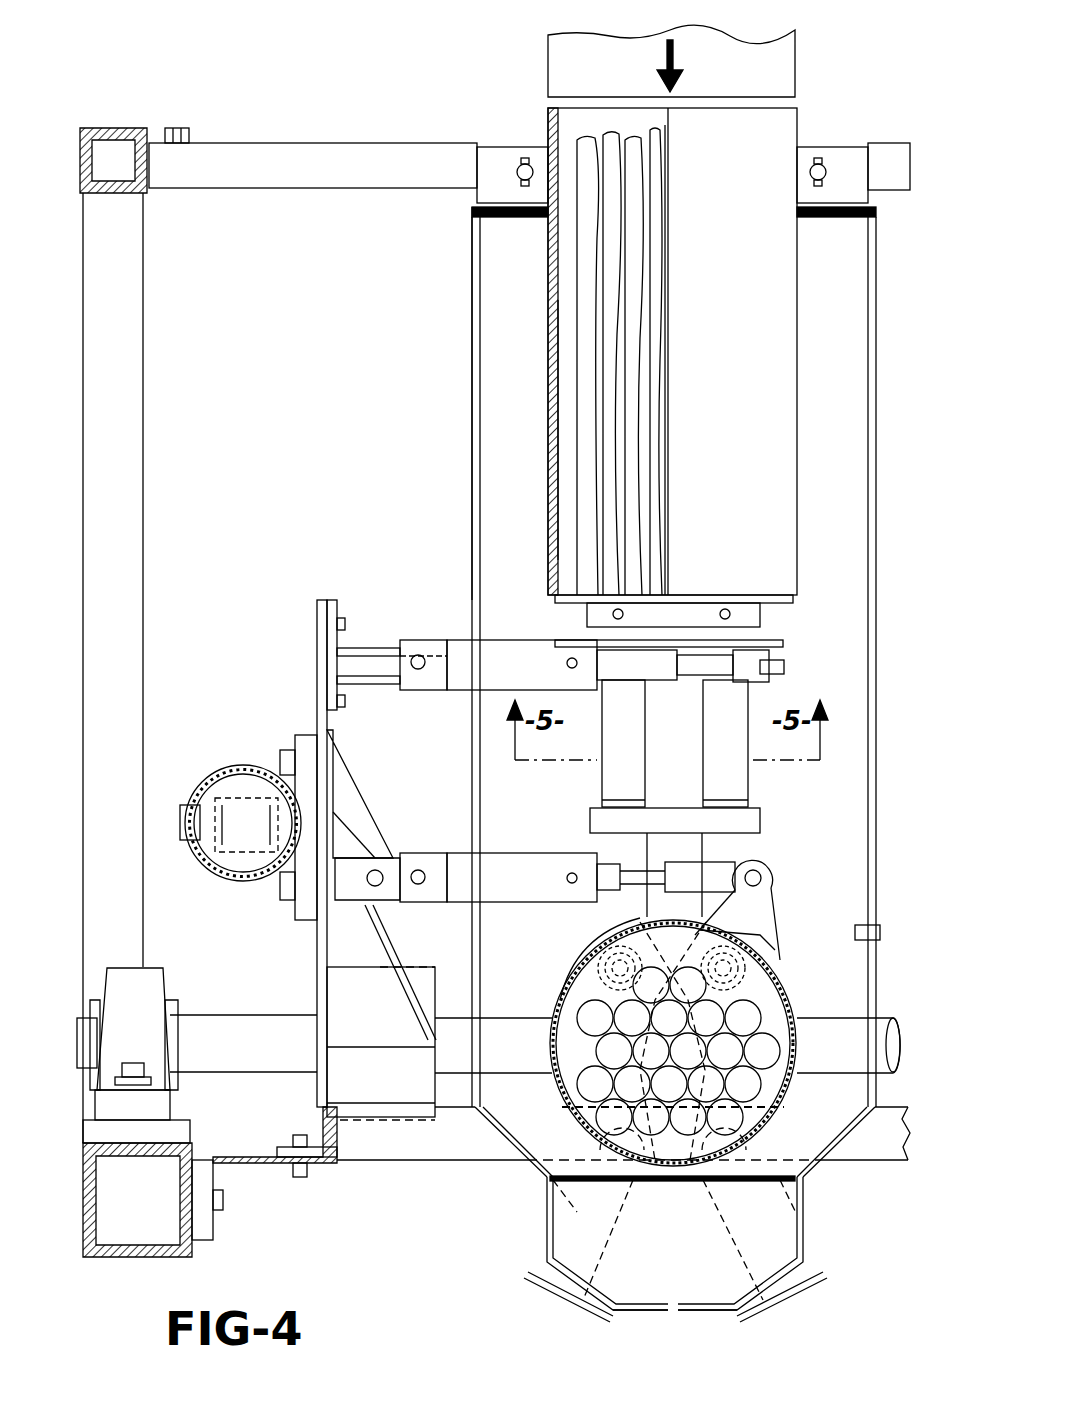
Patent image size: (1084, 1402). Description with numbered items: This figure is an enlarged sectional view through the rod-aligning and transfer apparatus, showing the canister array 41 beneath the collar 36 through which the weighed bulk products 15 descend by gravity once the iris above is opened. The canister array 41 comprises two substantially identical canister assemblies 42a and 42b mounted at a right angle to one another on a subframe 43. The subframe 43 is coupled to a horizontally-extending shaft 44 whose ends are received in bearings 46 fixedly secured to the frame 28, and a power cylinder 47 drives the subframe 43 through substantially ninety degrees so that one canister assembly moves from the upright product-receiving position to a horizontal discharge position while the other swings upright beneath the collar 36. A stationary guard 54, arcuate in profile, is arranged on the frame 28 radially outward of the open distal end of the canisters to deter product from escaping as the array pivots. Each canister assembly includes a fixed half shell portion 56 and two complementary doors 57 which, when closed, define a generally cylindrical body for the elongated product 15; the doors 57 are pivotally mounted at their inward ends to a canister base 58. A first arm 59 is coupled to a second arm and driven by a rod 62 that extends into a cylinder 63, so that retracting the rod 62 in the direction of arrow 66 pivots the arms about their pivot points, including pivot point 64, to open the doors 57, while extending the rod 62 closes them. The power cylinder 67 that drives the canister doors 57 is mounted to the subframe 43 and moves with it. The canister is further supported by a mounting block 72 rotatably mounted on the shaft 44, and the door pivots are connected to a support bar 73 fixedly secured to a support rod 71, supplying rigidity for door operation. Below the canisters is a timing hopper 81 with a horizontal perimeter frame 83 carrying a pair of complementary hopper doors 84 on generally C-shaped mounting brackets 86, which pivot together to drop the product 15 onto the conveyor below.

The bulk products 15 is at (600, 352).
The frame 28 is at (145, 628).
The collar 36 is at (548, 80).
The canister array 41 is at (812, 440).
The canister assembly 42a is at (548, 428).
The canister assembly 42b is at (575, 983).
The subframe 43 is at (318, 640).
The horizontally-extending shaft 44 is at (272, 998).
The bearings 46 is at (158, 985).
The power cylinder 47 is at (248, 770).
The stationary guard 54 is at (487, 268).
The fixed half shell portion 56 is at (772, 882).
The doors 57 is at (582, 1128).
The canister base 58 is at (750, 605).
The first arm 59 is at (766, 934).
The rod 62 is at (673, 1041).
The cylinder 63 is at (455, 640).
The pivot point 64 is at (625, 980).
The arrow 66 is at (630, 870).
The power cylinder 67 is at (455, 853).
The support rod 71 is at (700, 880).
The mounting block 72 is at (420, 1097).
The support bar 73 is at (762, 815).
The timing hopper 81 is at (547, 1203).
The perimeter frame 83 is at (350, 1163).
The hopper doors 84 is at (640, 1314).
The mounting brackets 86 is at (535, 1276).